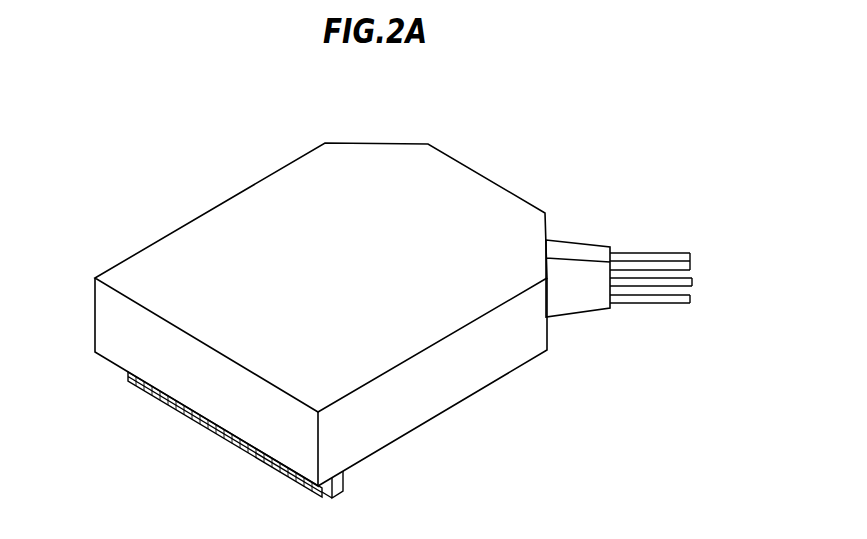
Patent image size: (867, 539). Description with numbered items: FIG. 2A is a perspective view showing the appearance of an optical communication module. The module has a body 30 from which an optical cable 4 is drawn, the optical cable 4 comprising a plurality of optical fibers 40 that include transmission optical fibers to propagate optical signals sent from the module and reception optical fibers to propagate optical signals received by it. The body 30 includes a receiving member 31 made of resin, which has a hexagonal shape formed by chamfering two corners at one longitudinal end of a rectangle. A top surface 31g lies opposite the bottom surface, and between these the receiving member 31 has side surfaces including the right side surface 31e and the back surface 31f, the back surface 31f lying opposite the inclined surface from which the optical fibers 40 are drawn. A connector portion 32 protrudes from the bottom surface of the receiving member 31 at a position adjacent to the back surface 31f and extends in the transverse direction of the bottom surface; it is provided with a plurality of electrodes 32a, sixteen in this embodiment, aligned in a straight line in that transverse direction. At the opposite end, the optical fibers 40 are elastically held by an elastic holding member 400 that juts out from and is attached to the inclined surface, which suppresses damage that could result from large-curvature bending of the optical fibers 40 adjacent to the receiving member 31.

The body 30 is at (173, 174).
The receiving member 31 is at (287, 165).
The top surface 31g is at (403, 157).
The right side surface 31e is at (477, 372).
The back surface 31f is at (257, 418).
The connector portion 32 is at (338, 485).
The electrodes 32a is at (315, 485).
The elastic holding member 400 is at (560, 250).
The optical fibers 40 is at (620, 256).
The optical cable 4 is at (629, 320).